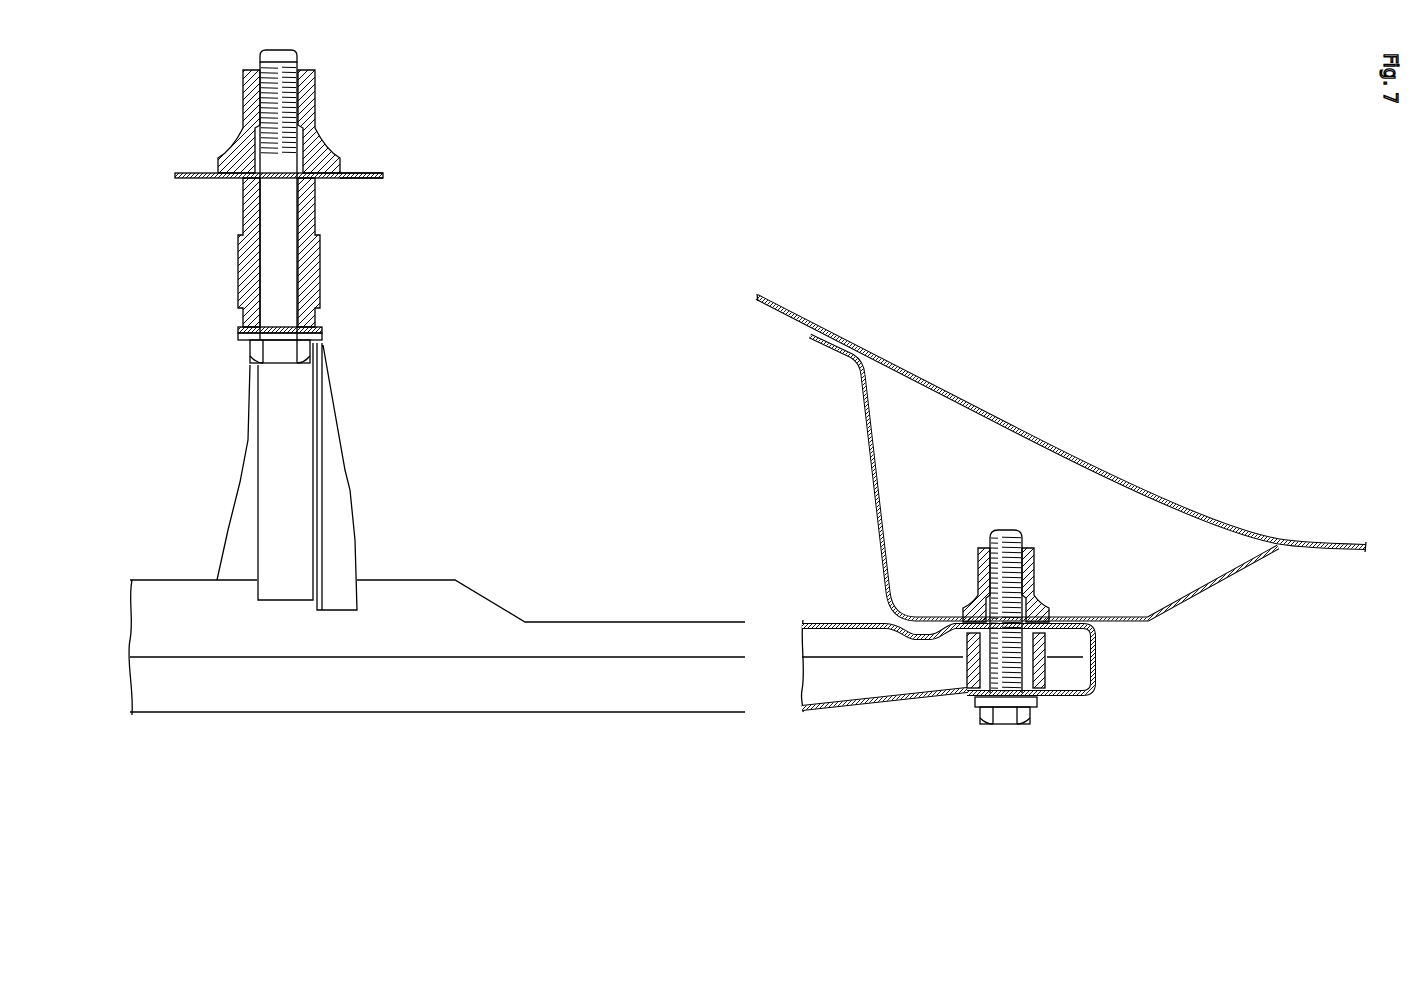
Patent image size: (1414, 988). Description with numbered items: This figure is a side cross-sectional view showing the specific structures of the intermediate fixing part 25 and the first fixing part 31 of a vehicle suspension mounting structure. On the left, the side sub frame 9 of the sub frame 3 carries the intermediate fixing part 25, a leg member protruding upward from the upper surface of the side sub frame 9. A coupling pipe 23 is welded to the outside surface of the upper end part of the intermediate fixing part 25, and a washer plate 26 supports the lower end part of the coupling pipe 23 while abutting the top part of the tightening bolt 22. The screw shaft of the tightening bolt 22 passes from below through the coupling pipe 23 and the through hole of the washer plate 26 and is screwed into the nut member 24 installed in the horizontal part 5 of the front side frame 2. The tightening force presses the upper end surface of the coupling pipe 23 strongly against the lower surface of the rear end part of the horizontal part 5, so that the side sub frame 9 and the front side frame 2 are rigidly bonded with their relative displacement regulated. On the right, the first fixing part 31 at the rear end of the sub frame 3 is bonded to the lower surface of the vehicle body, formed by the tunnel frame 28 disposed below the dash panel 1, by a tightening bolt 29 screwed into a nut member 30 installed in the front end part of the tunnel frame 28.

The dash panel 1 is at (785, 310).
The front side frame 2 is at (371, 186).
The sub frame 3 is at (583, 596).
The horizontal part 5 is at (193, 174).
The side sub frame 9 is at (413, 713).
The tightening bolt 22 is at (298, 62).
The coupling pipe 23 is at (249, 207).
The nut member 24 is at (243, 77).
The intermediate fixing part 25 is at (372, 487).
The washer plate 26 is at (322, 333).
The tunnel frame 28 is at (860, 433).
The tightening bolt 29 is at (992, 530).
The nut member 30 is at (1035, 578).
The first fixing part 31 is at (973, 712).